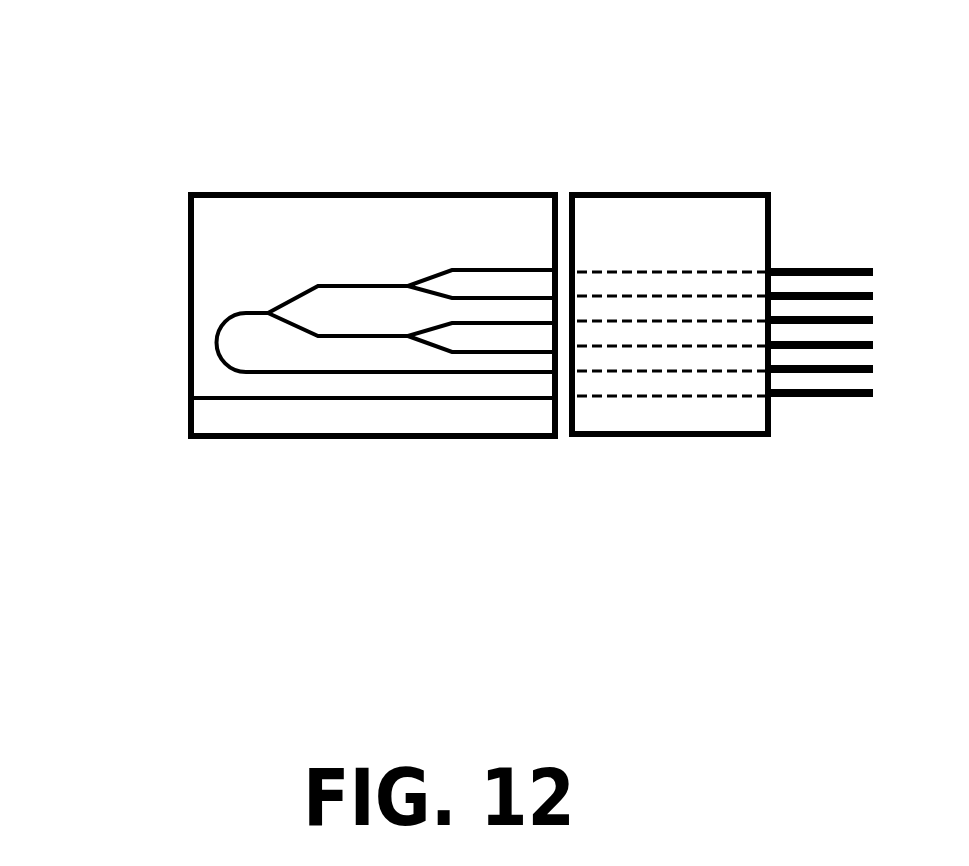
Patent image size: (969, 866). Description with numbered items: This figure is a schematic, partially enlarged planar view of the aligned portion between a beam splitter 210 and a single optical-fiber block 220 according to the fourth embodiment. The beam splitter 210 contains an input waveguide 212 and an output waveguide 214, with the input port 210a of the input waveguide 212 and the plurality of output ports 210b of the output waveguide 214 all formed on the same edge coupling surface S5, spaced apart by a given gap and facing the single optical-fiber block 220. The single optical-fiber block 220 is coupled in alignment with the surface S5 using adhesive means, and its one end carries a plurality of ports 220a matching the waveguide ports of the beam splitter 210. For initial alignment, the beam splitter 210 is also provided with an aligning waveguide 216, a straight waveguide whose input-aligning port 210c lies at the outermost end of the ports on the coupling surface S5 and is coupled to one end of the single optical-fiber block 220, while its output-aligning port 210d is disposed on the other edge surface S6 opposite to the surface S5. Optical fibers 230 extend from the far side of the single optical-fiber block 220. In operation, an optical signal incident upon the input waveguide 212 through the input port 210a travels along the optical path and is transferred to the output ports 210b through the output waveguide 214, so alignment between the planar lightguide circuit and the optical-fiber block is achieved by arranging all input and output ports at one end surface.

The beam splitter 210 is at (360, 235).
The input port 210a is at (562, 377).
The output ports 210b is at (552, 268).
The input-aligning port 210c is at (552, 395).
The output-aligning port 210d is at (189, 400).
The input waveguide 212 is at (397, 375).
The output waveguide 214 is at (495, 270).
The aligning waveguide 216 is at (327, 401).
The single optical-fiber block 220 is at (695, 228).
The ports 220a is at (577, 272).
The optical fibers 230 is at (810, 263).
The edge coupling surface S5 is at (562, 207).
The other edge surface S6 is at (190, 250).